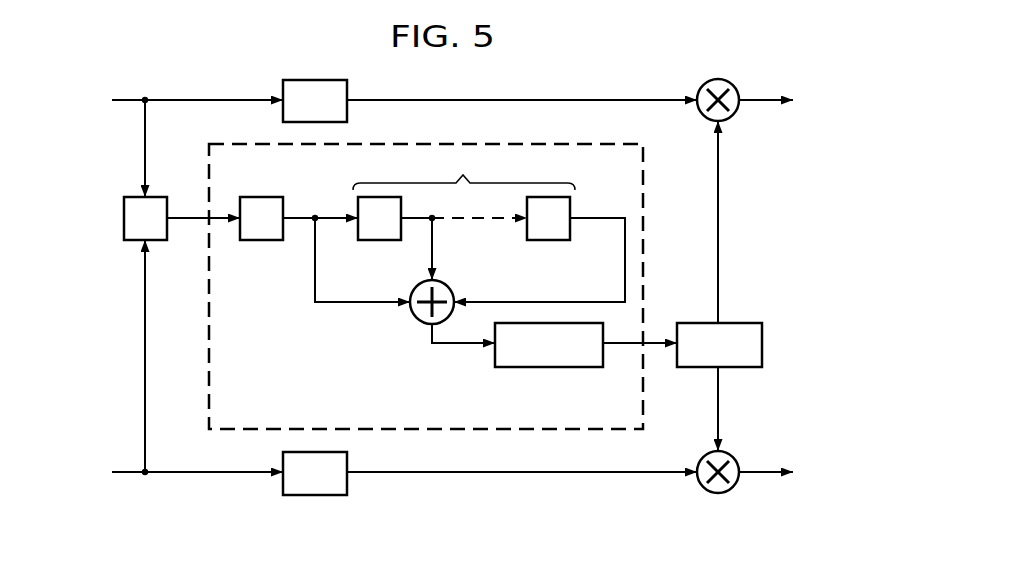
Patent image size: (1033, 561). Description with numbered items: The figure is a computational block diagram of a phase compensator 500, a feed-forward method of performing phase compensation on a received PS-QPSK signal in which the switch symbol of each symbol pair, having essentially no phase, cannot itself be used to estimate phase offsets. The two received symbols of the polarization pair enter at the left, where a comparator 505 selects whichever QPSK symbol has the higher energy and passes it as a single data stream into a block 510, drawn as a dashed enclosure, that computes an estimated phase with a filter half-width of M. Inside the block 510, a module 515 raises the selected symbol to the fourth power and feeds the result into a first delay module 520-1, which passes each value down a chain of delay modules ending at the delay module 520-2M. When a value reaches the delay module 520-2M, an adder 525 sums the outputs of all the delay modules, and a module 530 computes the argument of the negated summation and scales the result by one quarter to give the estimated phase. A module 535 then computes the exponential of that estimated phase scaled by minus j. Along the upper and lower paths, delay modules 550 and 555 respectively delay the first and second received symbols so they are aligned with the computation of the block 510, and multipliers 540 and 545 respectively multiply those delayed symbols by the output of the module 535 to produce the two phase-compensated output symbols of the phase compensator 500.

The phase compensator 500 is at (622, 55).
The comparator 505 is at (124, 208).
The block 510 is at (313, 382).
The module 515 is at (263, 240).
The first delay module 520-1 is at (378, 240).
The delay module 520-2M is at (548, 240).
The adder 525 is at (422, 323).
The module 530 is at (548, 367).
The module 535 is at (762, 355).
The multiplier 540 is at (728, 80).
The multiplier 545 is at (742, 485).
The delay module 550 is at (283, 90).
The delay module 555 is at (283, 484).